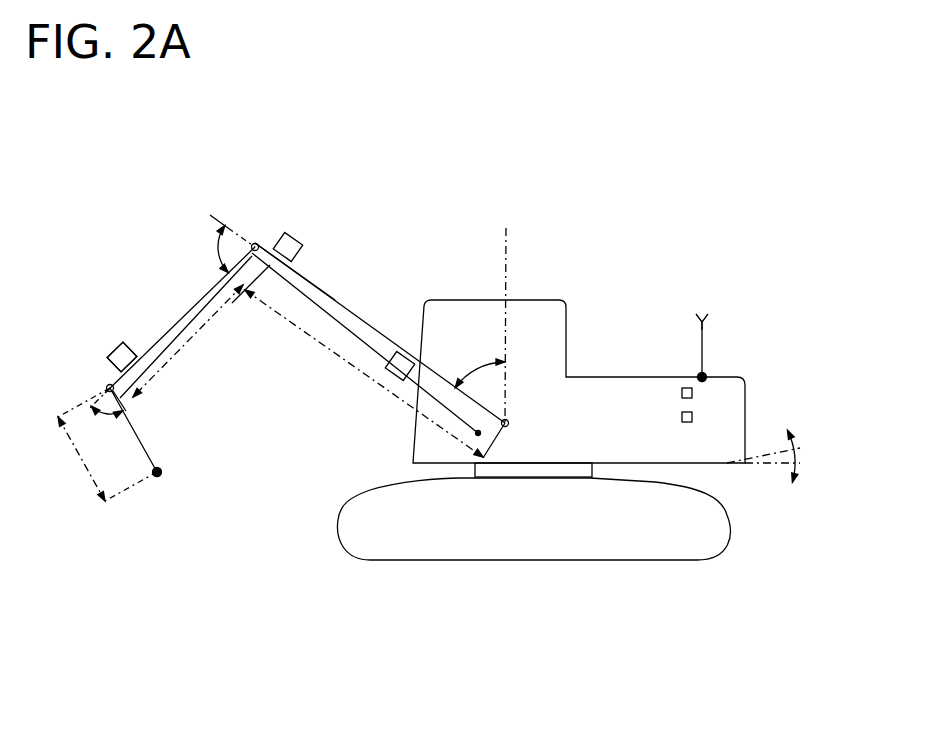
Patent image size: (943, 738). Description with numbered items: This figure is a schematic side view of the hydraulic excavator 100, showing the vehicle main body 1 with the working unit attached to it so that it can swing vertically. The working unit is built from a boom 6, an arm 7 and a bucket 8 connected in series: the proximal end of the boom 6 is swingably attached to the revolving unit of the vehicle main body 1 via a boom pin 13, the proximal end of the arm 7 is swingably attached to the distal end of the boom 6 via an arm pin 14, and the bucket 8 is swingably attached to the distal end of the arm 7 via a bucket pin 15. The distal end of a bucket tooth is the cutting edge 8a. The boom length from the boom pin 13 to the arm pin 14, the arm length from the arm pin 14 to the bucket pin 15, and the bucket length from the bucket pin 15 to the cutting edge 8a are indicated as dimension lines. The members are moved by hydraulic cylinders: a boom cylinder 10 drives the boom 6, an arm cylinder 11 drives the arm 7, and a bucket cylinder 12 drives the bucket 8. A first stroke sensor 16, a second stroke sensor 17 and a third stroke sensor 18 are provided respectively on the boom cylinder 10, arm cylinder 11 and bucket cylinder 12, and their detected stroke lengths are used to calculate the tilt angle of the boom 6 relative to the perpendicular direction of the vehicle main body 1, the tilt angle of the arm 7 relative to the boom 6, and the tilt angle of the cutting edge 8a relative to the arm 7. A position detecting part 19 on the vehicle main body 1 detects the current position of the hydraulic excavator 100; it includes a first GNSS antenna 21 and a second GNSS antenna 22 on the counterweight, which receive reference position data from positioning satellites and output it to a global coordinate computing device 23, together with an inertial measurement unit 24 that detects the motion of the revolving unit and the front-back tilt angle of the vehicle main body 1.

The hydraulic excavator 100 is at (558, 210).
The vehicle main body 1 is at (527, 315).
The boom 6 is at (353, 313).
The arm 7 is at (182, 323).
The bucket 8 is at (135, 423).
The cutting edge 8a is at (172, 478).
The boom cylinder 10 is at (412, 458).
The arm cylinder 11 is at (303, 277).
The bucket cylinder 12 is at (147, 347).
The boom pin 13 is at (504, 428).
The arm pin 14 is at (256, 243).
The bucket pin 15 is at (107, 386).
The first stroke sensor 16 is at (400, 353).
The second stroke sensor 17 is at (288, 236).
The third stroke sensor 18 is at (118, 354).
The position detecting part 19 is at (720, 338).
The first GNSS antenna 21 is at (714, 280).
The second GNSS antenna 22 is at (702, 320).
The global coordinate computing device 23 is at (687, 387).
The inertial measurement unit 24 is at (685, 411).